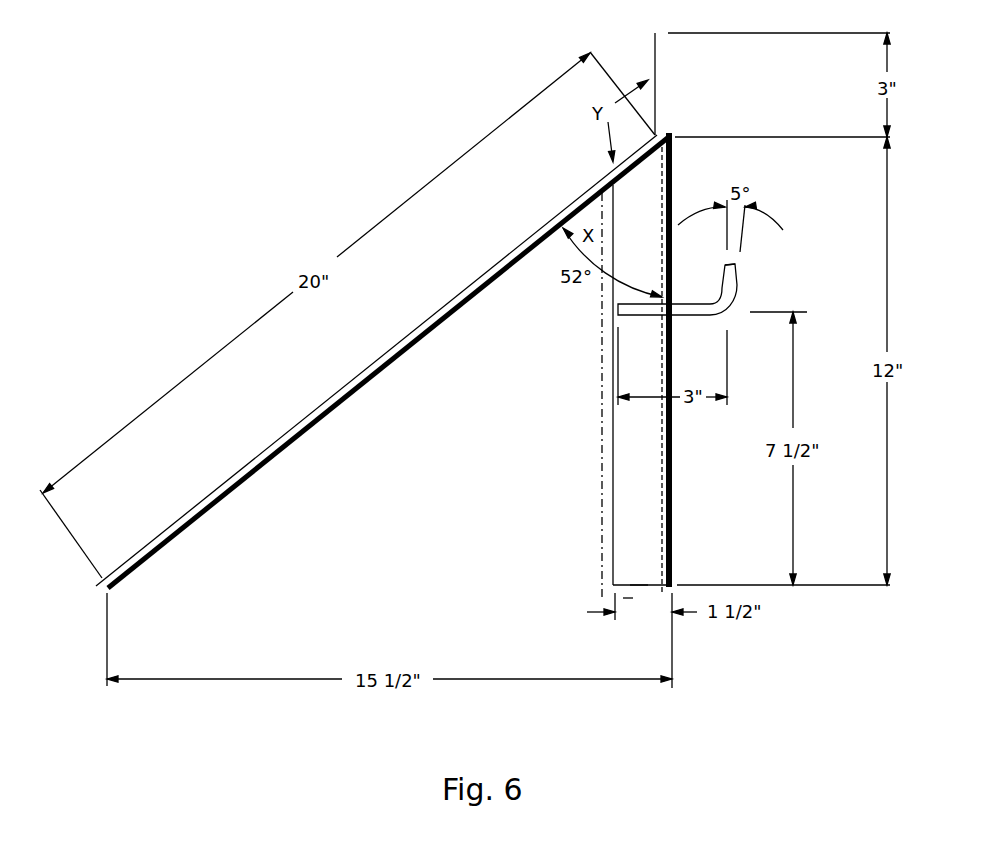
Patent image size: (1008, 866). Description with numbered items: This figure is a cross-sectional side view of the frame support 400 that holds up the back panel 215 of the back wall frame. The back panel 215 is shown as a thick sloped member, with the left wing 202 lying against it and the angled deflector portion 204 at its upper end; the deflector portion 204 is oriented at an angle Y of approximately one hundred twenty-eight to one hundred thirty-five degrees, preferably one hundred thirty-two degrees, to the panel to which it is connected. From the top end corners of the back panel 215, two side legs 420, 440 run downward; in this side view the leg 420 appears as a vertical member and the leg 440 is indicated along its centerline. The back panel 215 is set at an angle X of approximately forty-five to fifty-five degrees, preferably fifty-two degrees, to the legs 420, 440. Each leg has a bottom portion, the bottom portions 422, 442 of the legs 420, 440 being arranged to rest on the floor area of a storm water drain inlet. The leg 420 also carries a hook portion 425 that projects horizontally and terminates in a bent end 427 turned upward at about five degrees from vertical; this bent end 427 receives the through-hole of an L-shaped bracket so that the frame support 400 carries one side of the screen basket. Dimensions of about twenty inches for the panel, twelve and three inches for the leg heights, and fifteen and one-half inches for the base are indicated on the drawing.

The angled rectangular deflector portion 204 is at (653, 53).
The left rectangular shaped wing 202 is at (172, 523).
The back panel 215 is at (257, 475).
The frame support 400 is at (603, 363).
The side leg 420 is at (633, 513).
The side leg 440 is at (600, 567).
The bottom portion 422 is at (685, 618).
The bottom portion 442 is at (623, 598).
The hook portion 425 is at (687, 313).
The bent end 427 is at (728, 298).